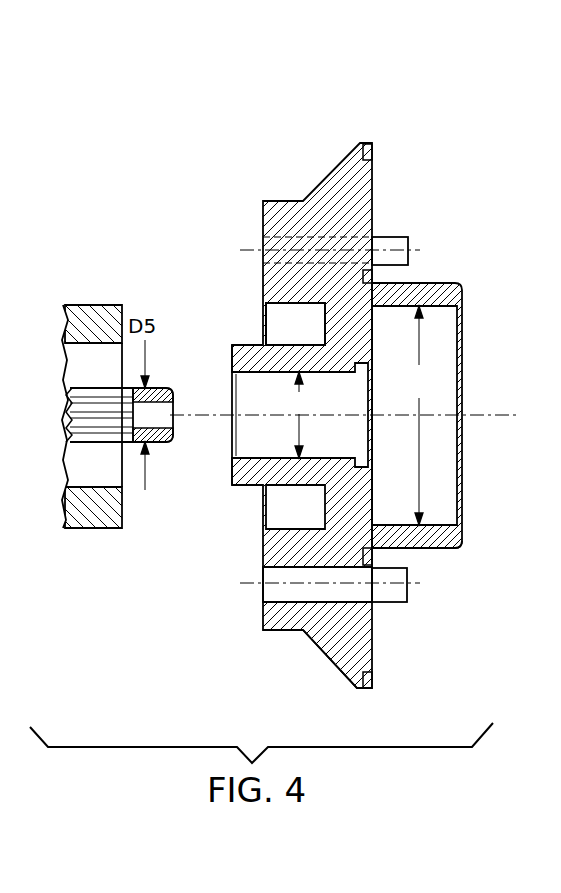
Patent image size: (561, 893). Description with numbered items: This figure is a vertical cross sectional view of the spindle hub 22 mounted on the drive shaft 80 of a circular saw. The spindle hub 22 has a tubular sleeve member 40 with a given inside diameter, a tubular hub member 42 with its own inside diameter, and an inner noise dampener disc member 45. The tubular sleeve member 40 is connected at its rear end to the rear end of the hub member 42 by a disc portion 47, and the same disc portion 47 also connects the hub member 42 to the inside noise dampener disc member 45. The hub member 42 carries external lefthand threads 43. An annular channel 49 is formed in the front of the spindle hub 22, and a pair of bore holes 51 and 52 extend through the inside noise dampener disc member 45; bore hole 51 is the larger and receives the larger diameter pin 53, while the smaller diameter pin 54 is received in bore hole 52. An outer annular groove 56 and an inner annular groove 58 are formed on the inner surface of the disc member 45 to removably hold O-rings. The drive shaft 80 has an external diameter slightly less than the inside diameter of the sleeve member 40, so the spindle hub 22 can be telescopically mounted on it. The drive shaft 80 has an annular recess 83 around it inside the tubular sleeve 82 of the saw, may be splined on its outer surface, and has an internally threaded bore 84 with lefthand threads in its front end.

The spindle hub 22 is at (313, 138).
The outer annular groove 56 is at (373, 151).
The bore hole 52 is at (383, 232).
The smaller diameter pin 54 is at (396, 237).
The external lefthand threads 43 is at (438, 283).
The annular channel 49 is at (267, 312).
The drive shaft 80 is at (166, 388).
The internally threaded bore 84 is at (165, 408).
The tubular sleeve member 40 is at (233, 480).
The annular recess 83 is at (108, 478).
The tubular sleeve 82 is at (94, 530).
The disc portion 47 is at (352, 488).
The tubular hub member 42 is at (461, 548).
The inner annular groove 58 is at (373, 557).
The bore hole 51 is at (273, 596).
The larger diameter pin 53 is at (388, 594).
The inner noise dampener disc member 45 is at (353, 648).